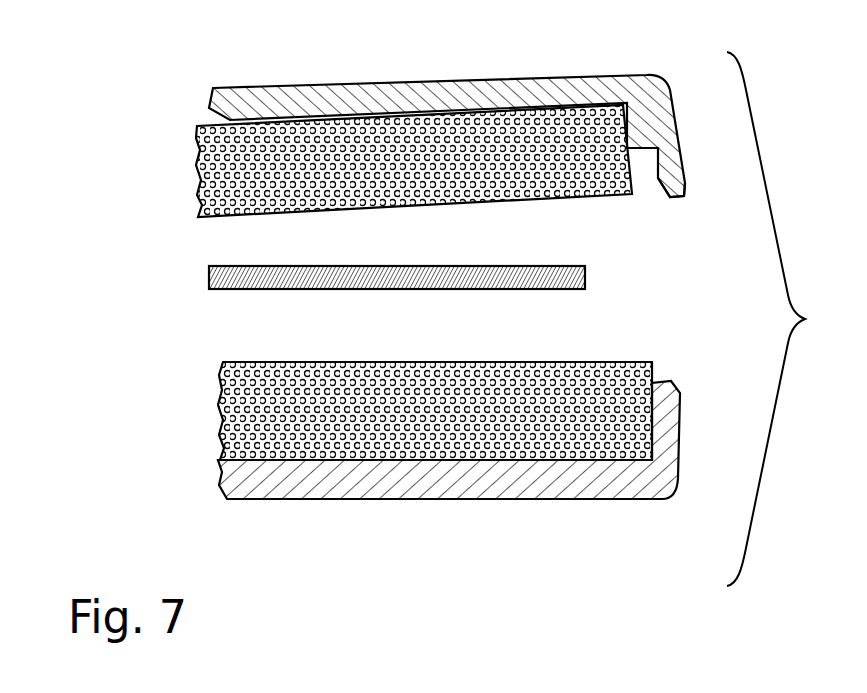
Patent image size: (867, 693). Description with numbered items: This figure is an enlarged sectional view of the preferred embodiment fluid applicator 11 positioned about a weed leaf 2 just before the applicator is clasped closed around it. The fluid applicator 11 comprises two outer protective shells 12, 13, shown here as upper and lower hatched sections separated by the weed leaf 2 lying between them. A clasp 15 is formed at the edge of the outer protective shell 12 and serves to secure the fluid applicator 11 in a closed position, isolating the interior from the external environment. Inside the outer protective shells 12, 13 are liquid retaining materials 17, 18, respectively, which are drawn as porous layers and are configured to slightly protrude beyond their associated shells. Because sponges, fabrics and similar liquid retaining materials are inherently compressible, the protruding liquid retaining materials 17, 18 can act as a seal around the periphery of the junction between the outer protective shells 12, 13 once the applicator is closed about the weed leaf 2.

The fluid applicator 11 is at (218, 49).
The outer protective shell 12 is at (514, 80).
The outer protective shell 13 is at (487, 500).
The clasp 15 is at (688, 183).
The liquid retaining material 17 is at (433, 179).
The liquid retaining material 18 is at (503, 425).
The sensor strip / sheet element 2 is at (290, 286).